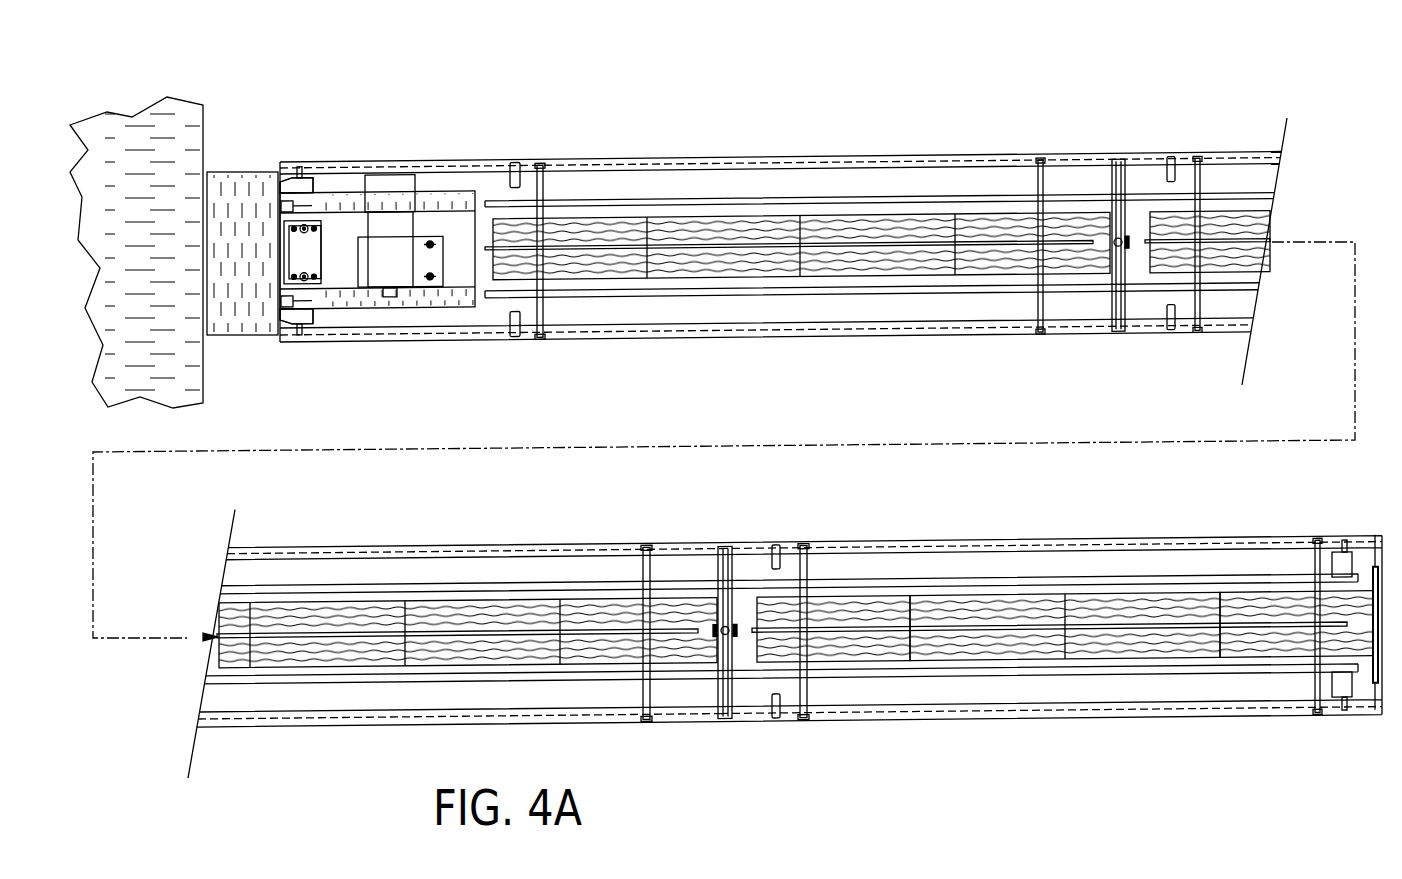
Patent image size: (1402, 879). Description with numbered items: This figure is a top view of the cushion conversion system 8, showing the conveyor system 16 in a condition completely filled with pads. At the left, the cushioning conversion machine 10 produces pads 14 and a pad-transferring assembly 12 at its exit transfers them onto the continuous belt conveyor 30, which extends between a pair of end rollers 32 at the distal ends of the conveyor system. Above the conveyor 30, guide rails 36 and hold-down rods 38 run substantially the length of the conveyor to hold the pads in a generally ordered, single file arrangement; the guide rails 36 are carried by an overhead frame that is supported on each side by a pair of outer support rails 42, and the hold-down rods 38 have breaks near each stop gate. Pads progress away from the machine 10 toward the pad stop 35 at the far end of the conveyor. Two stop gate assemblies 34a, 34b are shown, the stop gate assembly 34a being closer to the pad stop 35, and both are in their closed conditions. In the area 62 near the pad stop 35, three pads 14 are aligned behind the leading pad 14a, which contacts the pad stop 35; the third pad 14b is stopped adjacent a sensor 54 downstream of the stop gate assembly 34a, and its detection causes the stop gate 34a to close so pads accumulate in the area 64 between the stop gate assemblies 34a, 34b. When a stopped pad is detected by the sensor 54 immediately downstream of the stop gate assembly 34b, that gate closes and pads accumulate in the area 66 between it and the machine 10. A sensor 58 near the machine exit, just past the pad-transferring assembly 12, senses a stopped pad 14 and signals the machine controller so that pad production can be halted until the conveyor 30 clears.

The cushion conversion system 8 is at (667, 140).
The cushioning conversion machine 10 is at (252, 116).
The pad-transferring assembly 12 is at (438, 144).
The pads 14 is at (865, 220).
The leading pad 14a is at (1268, 650).
The third pad 14b is at (860, 613).
The conveyor system 16 is at (1009, 126).
The continuous belt conveyor 30 is at (715, 205).
The end rollers 32 is at (310, 322).
The stop gate assembly 34a is at (727, 534).
The stop gate assembly 34b is at (1124, 343).
The pad stop 35 is at (1380, 622).
The guide rails 36 is at (710, 290).
The hold-down rods 38 is at (940, 250).
The outer support rails 42 is at (597, 335).
The sensor 54 is at (790, 698).
The sensor 58 is at (527, 158).
The area 62 is at (1139, 512).
The area 64 is at (419, 522).
The area 66 is at (823, 130).